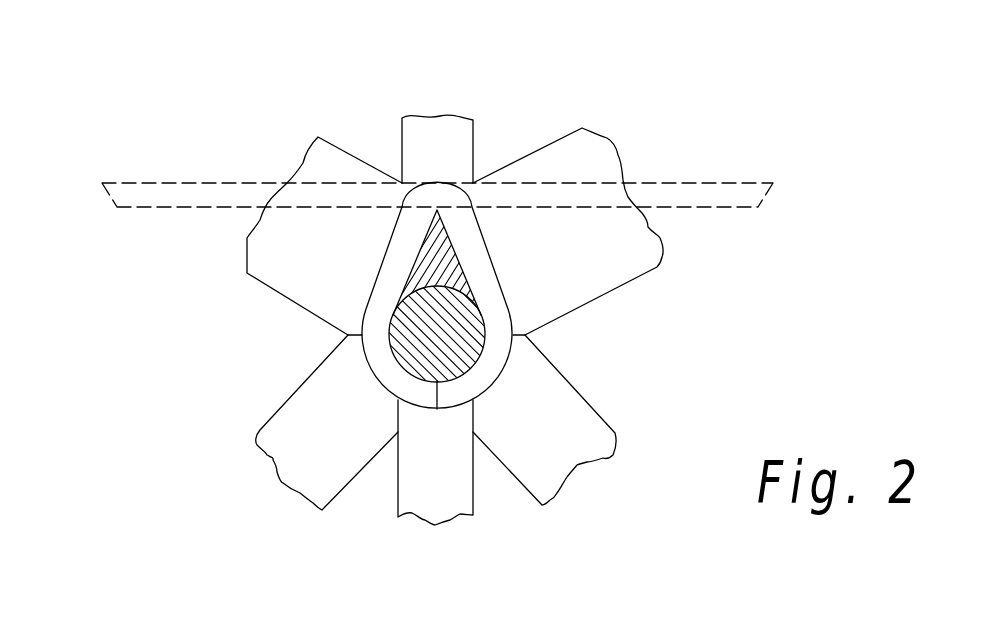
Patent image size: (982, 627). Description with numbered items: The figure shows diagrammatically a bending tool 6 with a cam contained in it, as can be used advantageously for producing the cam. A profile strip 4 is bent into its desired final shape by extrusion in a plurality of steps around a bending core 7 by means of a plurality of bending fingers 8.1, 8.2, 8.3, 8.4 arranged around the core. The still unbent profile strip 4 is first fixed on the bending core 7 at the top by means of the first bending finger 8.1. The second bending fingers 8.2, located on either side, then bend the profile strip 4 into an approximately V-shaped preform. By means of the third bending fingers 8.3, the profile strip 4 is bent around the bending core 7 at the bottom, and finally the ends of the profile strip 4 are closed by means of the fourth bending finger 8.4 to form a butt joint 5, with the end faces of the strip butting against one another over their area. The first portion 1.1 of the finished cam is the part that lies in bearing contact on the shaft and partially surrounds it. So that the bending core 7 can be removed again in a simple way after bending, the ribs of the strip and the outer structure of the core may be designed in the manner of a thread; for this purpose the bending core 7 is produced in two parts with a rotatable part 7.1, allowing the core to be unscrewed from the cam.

The first portion 1.1 is at (482, 262).
The profile strip 4 is at (122, 183).
The butt joint 5 is at (408, 405).
The bending tool 6 is at (429, 45).
The bending core 7 is at (427, 267).
The rotatable part 7.1 is at (402, 352).
The first bending finger 8.1 is at (467, 137).
The second bending fingers 8.2 is at (322, 152).
The third bending fingers 8.3 is at (287, 415).
The fourth bending finger 8.4 is at (447, 503).